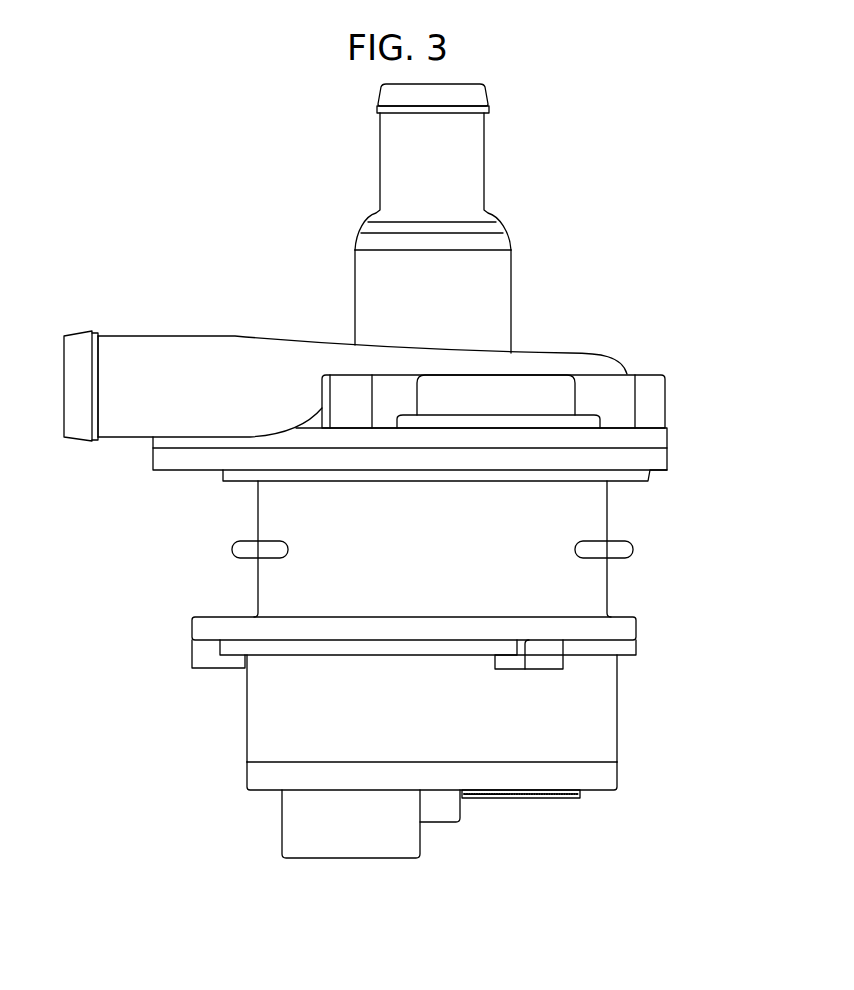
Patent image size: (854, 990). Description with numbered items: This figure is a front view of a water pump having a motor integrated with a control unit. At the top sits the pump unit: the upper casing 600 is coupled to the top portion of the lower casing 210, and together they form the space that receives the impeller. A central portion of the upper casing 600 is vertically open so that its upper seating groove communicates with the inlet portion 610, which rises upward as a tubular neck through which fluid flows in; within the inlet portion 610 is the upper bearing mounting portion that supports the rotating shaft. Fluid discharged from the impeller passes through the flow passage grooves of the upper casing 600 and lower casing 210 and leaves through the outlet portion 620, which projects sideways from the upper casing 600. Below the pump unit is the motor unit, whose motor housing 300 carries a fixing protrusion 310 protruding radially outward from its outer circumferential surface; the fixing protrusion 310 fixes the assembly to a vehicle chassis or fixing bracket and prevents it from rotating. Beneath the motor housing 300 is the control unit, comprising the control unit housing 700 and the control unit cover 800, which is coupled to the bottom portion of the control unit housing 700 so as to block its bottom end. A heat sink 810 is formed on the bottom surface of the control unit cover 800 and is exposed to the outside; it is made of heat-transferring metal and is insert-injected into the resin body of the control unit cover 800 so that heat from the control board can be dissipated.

The lower casing 210 is at (283, 438).
The motor housing 300 is at (273, 590).
The fixing protrusion 310 is at (230, 548).
The upper casing 600 is at (607, 352).
The inlet portion 610 is at (475, 165).
The outlet portion 620 is at (165, 343).
The control unit housing 700 is at (272, 738).
The control unit cover 800 is at (270, 782).
The heat sink 810 is at (520, 798).